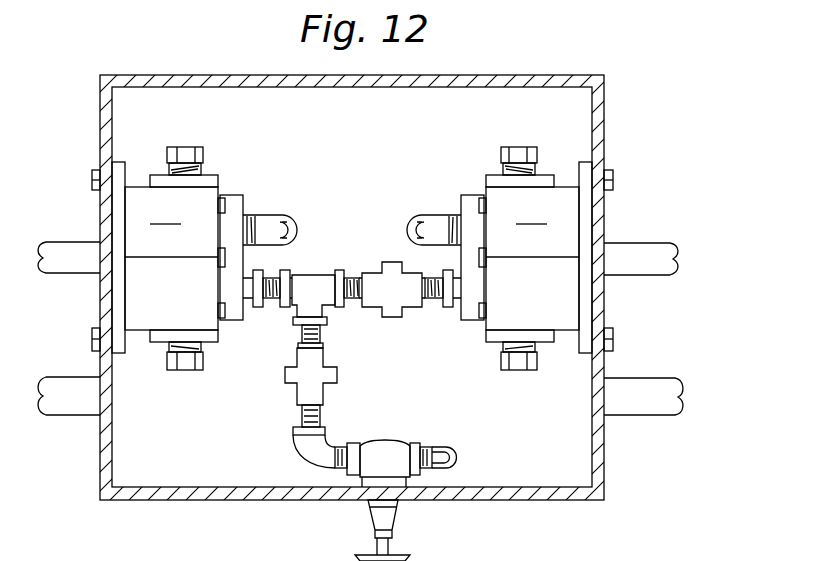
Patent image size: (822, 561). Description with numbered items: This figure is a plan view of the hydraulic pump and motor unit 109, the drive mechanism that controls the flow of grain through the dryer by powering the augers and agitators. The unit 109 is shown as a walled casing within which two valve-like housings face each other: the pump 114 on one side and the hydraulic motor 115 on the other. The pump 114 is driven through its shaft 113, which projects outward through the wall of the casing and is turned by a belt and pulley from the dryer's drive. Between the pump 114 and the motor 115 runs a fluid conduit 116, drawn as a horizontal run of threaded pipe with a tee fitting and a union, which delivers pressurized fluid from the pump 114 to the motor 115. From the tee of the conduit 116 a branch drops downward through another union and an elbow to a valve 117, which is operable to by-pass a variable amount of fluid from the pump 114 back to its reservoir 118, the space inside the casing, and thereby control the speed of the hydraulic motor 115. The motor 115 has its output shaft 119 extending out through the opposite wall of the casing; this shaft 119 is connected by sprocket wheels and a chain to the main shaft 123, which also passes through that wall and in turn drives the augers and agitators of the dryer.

The hydraulic pump and motor unit 109 is at (100, 128).
The shaft 113 is at (60, 246).
The pump 114 is at (204, 258).
The hydraulic motor 115 is at (499, 258).
The fluid conduit 116 is at (316, 280).
The valve 117 is at (395, 447).
The reservoir 118 is at (409, 379).
The shaft 119 is at (658, 248).
The main shaft 123 is at (647, 385).